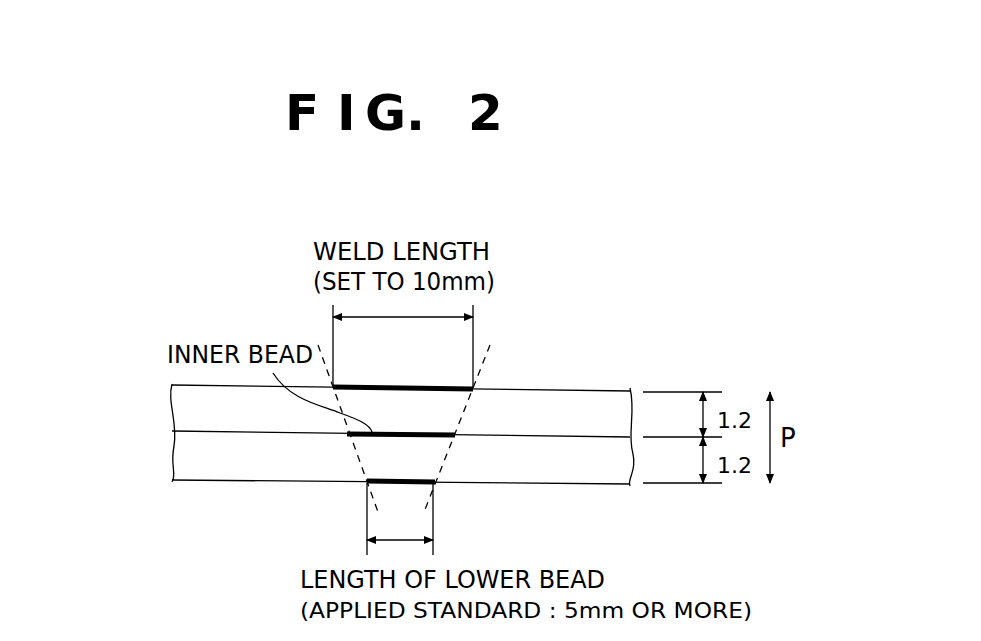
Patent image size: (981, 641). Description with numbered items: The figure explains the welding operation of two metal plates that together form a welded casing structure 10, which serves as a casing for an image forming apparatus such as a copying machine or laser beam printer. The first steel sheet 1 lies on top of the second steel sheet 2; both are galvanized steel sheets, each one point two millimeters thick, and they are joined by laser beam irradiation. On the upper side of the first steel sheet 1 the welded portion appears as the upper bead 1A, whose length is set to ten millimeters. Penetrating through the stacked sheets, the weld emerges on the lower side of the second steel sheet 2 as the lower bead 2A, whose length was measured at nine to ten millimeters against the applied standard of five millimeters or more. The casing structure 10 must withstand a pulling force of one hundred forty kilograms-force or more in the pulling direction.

The welded casing structure 10 is at (152, 431).
The first steel sheet 1 is at (585, 403).
The second steel sheet 2 is at (590, 463).
The upper bead 1A is at (365, 386).
The lower bead 2A is at (376, 489).